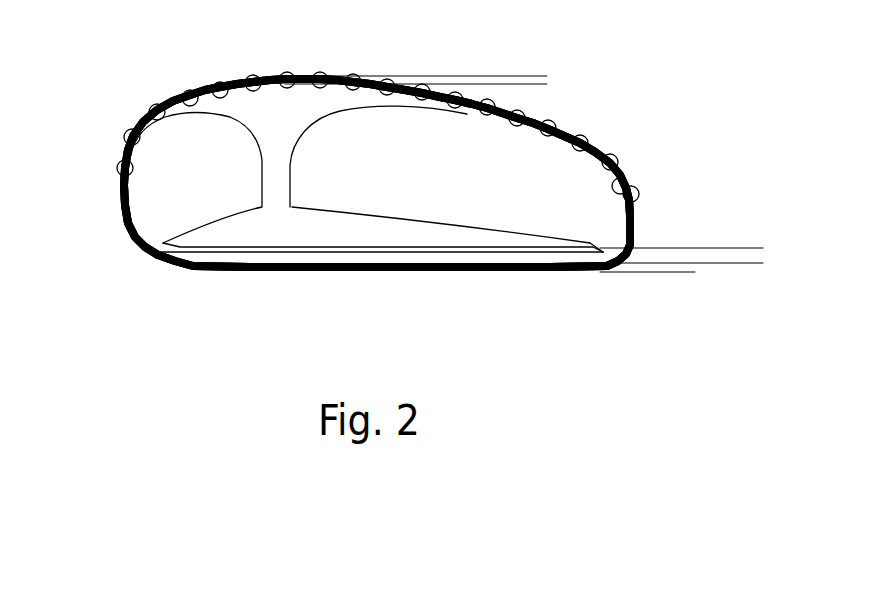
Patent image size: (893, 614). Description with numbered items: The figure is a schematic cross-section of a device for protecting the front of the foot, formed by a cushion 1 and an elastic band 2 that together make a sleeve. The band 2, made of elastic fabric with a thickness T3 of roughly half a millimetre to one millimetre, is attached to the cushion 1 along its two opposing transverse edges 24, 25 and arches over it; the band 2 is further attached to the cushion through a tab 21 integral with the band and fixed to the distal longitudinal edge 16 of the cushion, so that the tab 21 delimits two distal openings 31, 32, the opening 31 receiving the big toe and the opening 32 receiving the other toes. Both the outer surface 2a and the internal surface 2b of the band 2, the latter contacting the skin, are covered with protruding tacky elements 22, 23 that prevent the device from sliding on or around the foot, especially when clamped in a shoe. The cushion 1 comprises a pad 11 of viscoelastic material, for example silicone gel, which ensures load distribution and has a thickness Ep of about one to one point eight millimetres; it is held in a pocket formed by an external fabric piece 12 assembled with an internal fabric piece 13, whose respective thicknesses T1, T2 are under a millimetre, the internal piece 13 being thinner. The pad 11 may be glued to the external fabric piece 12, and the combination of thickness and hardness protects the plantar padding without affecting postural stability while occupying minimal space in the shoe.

The cushion 1 is at (543, 276).
The pad 11 is at (423, 252).
The external fabric piece 12 is at (489, 274).
The internal fabric piece 13 is at (353, 253).
The distal longitudinal edge 16 is at (333, 215).
The elastic band 2 is at (117, 185).
The outer surface 2a is at (302, 77).
The internal surface 2b is at (337, 90).
The tab 21 is at (274, 186).
The tacky elements 22 is at (183, 92).
The tacky elements 23 is at (447, 108).
The transverse edge 24 is at (135, 251).
The transverse edge 25 is at (620, 250).
The distal opening 31 is at (155, 209).
The distal opening 32 is at (514, 168).
The thickness of external fabric piece T1 is at (675, 240).
The thickness of internal fabric piece T2 is at (705, 263).
The thickness of band T3 is at (527, 56).
The thickness of pad Ep is at (743, 225).